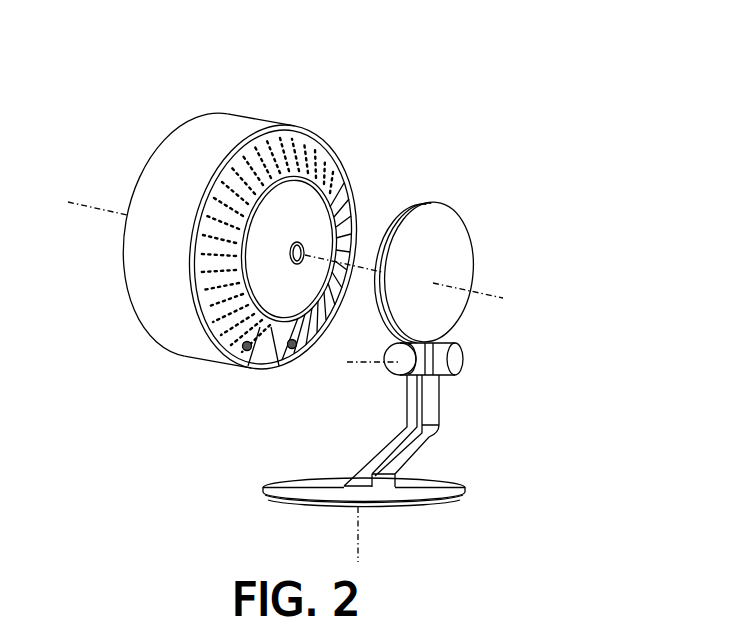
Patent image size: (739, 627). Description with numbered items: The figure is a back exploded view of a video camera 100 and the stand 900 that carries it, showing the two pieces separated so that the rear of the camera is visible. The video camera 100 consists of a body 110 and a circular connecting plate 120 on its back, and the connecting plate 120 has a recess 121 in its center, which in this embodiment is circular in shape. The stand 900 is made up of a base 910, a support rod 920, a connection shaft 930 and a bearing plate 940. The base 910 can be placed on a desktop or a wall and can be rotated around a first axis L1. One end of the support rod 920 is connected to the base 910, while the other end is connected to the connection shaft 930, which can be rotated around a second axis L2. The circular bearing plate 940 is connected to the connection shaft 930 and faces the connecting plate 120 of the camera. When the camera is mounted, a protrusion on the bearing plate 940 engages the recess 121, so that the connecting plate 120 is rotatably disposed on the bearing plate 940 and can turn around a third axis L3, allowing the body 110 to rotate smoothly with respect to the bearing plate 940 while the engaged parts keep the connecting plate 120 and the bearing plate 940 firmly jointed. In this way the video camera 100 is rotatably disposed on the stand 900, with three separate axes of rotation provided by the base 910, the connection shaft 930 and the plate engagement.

The video camera 100 is at (372, 53).
The body 110 is at (190, 143).
The connecting plate 120 is at (312, 207).
The recess 121 is at (308, 248).
The stand 900 is at (608, 332).
The base 910 is at (445, 480).
The support rod 920 is at (432, 413).
The connection shaft 930 is at (463, 357).
The bearing plate 940 is at (450, 320).
The first axis L1 is at (336, 521).
The second axis L2 is at (360, 347).
The third axis L3 is at (114, 184).